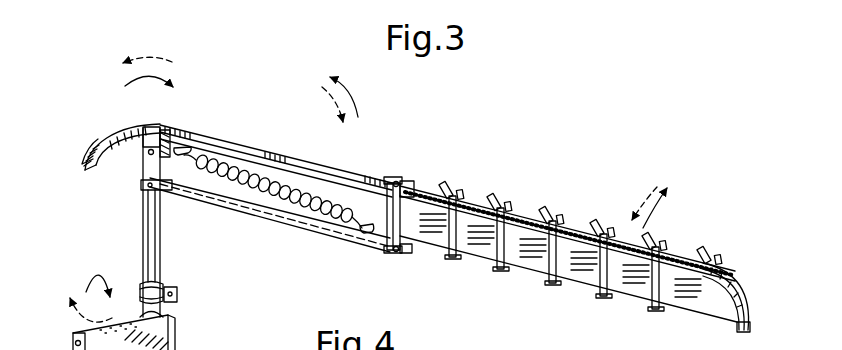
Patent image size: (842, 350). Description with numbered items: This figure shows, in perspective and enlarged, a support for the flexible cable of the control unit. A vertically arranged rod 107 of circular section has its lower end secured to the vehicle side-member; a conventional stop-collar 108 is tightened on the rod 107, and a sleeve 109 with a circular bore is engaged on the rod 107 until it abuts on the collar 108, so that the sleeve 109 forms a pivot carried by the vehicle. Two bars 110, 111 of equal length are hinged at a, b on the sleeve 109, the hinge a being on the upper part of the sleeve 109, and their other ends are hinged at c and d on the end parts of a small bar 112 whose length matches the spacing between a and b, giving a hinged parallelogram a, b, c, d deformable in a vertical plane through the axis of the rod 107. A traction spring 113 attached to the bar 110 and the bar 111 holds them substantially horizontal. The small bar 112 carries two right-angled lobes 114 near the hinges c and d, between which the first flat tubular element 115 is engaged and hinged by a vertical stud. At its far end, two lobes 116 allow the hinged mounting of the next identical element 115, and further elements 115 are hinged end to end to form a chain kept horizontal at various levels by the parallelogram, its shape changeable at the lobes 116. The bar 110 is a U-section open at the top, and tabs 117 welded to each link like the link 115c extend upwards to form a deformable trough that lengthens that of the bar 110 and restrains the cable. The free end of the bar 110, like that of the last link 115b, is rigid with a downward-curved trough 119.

The rod 107 is at (170, 318).
The stop-collar 108 is at (165, 288).
The sleeve 109 is at (150, 245).
The bar 110 is at (305, 166).
The bar 111 is at (322, 222).
The small bar 112 is at (387, 200).
The traction spring 113 is at (267, 198).
The lobes 114 is at (408, 195).
The tubular element 115 is at (423, 198).
The last link 115b is at (688, 297).
The link 115c is at (533, 215).
The lobes 116 is at (467, 202).
The tabs 117 is at (577, 235).
The troughs 119 is at (93, 152).
The hinge a is at (149, 152).
The hinge b is at (143, 186).
The hinge c is at (397, 181).
The hinge d is at (392, 250).